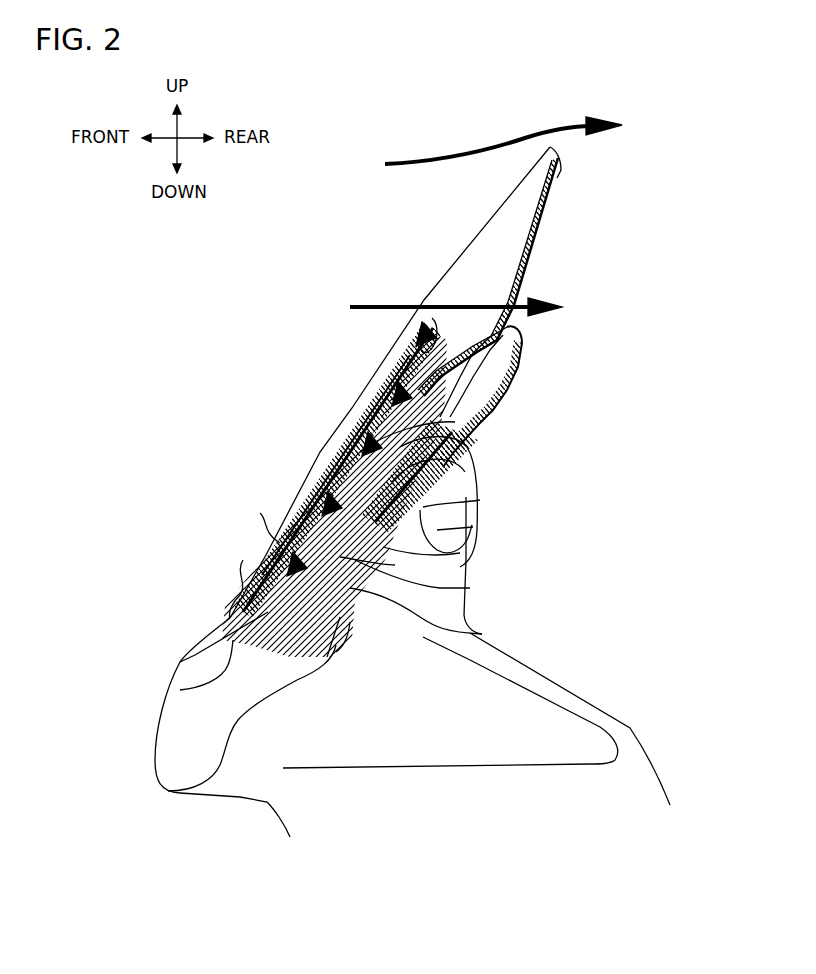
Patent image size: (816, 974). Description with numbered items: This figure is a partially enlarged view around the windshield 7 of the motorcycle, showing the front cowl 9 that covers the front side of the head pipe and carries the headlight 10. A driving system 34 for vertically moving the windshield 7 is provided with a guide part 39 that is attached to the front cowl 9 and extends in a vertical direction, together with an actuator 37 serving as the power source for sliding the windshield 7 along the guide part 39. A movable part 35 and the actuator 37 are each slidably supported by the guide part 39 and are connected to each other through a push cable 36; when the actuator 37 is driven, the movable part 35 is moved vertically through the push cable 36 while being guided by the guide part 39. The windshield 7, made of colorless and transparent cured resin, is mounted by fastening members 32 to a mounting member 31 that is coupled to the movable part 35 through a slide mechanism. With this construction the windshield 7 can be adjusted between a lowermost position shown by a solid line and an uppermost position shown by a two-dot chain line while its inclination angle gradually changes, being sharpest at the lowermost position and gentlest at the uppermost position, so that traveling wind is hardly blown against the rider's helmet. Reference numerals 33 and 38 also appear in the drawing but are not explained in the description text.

The windshield 7 is at (460, 243).
The front cowl 9 is at (180, 662).
The headlight 10 is at (155, 742).
The mounting member 31 is at (398, 345).
The fastening members 32 is at (412, 322).
The bracket 33 is at (270, 546).
The driving system 34 is at (230, 618).
The movable part 35 is at (470, 498).
The push cable 36 is at (180, 690).
The actuator 37 is at (480, 633).
The link 38 is at (480, 432).
The guide part 39 is at (478, 536).